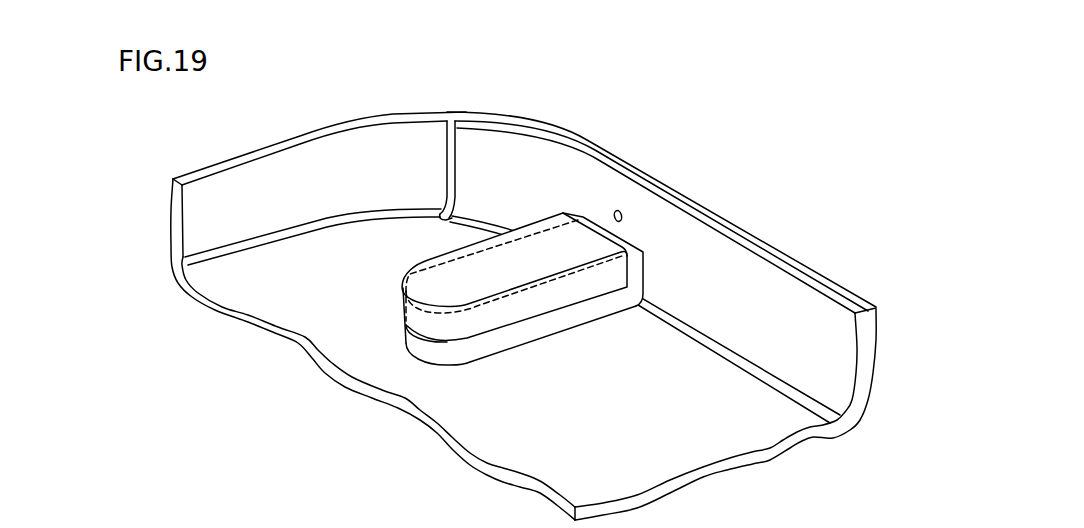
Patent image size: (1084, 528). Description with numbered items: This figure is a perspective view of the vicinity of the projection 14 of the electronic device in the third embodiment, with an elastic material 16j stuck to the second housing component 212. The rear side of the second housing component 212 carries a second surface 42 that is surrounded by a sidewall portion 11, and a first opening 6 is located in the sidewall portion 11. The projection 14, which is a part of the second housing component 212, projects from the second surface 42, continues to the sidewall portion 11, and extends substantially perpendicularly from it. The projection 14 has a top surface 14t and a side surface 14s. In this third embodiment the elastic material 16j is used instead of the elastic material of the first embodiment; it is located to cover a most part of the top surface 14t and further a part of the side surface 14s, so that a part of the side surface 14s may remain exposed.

The sidewall portion 11 is at (377, 149).
The elastic material 16j is at (490, 244).
The projection 14 is at (545, 291).
The first opening 6 is at (618, 209).
The top surface 14t is at (626, 241).
The side surface 14s is at (518, 333).
The second housing component 212 is at (290, 340).
The second surface 42 is at (767, 434).